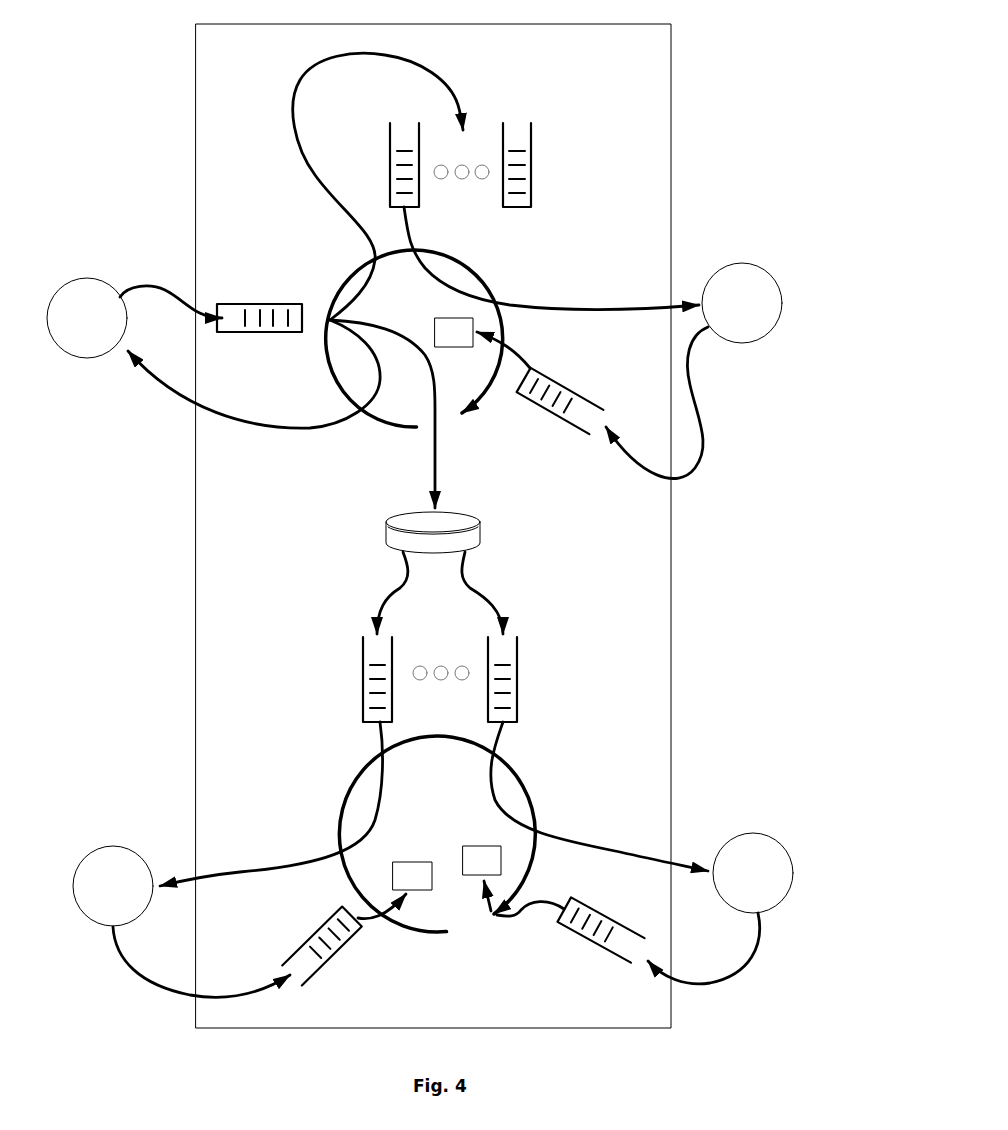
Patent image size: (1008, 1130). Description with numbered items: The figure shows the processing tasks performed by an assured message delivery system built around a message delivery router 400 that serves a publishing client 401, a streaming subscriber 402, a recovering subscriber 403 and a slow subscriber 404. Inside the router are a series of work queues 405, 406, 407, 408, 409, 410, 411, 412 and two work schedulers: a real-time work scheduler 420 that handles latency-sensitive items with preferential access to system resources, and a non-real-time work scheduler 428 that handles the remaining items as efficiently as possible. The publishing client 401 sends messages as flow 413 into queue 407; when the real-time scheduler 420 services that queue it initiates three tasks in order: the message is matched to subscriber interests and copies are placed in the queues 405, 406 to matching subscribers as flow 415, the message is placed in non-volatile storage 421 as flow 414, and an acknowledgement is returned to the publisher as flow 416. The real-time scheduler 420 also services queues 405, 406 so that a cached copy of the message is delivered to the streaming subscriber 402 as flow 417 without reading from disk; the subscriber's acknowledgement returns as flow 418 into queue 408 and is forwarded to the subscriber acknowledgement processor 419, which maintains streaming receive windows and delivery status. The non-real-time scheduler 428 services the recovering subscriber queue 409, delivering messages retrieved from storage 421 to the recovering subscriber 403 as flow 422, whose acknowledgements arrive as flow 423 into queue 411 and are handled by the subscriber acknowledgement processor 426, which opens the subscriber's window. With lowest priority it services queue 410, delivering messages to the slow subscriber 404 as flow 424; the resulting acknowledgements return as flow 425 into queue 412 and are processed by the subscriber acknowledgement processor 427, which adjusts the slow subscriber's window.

The message delivery router 400 is at (438, 24).
The publishing client 401 is at (87, 358).
The streaming subscriber 402 is at (782, 300).
The recovering subscriber 403 is at (113, 846).
The slow subscriber 404 is at (793, 871).
The work queue 405 is at (390, 156).
The work queue 406 is at (531, 157).
The work queue 407 is at (268, 304).
The streaming subscriber acknowledgement queue 408 is at (546, 416).
The recovering subscriber queue 409 is at (363, 677).
The work queue 410 is at (517, 670).
The work queue 411 is at (318, 930).
The work queue 412 is at (583, 940).
The published message flow 413 is at (154, 288).
The storage flow 414 is at (433, 470).
The message matching and queuing flow 415 is at (297, 110).
The publisher acknowledgement flow 416 is at (290, 428).
The streaming subscriber delivery flow 417 is at (606, 307).
The streaming subscriber acknowledgement flow 418 is at (705, 455).
The subscriber acknowledgement processor 419 is at (447, 347).
The real-time work scheduler 420 is at (490, 276).
The non-volatile storage 421 is at (480, 532).
The recovering subscriber delivery flow 422 is at (275, 866).
The recovering subscriber acknowledgement flow 423 is at (140, 986).
The slow subscriber delivery flow 424 is at (616, 842).
The slow subscriber acknowledgement flow 425 is at (745, 975).
The subscriber acknowledgement processor 426 is at (410, 862).
The subscriber acknowledgement processor 427 is at (481, 846).
The non-real-time work scheduler 428 is at (357, 780).